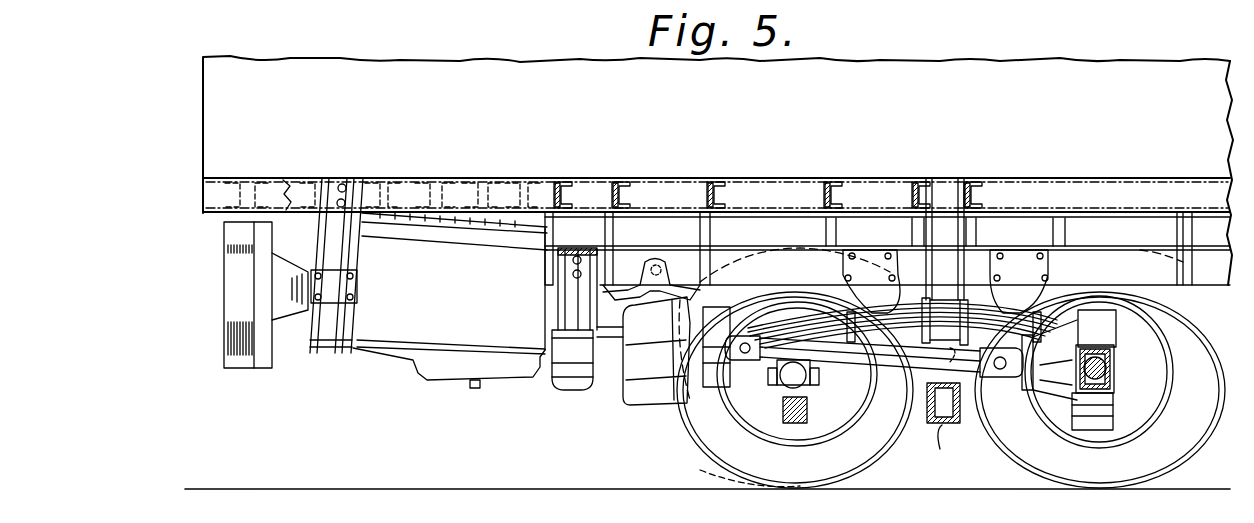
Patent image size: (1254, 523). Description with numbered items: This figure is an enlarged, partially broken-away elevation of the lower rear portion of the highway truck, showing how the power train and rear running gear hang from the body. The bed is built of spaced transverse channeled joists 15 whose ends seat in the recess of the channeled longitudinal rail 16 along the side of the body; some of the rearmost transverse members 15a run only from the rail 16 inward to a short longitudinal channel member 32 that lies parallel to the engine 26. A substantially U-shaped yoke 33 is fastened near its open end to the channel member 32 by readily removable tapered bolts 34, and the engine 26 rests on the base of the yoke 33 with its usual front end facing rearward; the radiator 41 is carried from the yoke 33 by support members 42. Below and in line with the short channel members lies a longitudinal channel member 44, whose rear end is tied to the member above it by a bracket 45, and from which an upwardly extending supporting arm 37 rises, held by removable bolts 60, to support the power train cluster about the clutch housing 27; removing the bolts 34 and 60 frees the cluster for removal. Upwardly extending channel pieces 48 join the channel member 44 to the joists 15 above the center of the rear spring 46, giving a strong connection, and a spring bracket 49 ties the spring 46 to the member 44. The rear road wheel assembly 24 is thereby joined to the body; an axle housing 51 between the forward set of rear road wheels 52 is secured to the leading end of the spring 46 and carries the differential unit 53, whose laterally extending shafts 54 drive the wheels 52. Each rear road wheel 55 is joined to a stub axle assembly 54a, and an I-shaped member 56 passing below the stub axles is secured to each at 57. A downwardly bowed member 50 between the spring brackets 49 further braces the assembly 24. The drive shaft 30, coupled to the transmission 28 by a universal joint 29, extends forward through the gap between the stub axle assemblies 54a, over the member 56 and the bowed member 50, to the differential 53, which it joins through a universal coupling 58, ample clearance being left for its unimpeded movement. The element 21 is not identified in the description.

The car body 21 is at (526, 78).
The channeled longitudinal rails 16 is at (203, 192).
The transverse channeled joists 15 is at (700, 188).
The rearmost transverse members 15a is at (258, 186).
The short channel member 32 is at (488, 190).
The tapered bolts 34 is at (350, 180).
The U-shaped yoke 33 is at (356, 260).
The radiator 41 is at (226, 248).
The support members 42 is at (268, 290).
The engine 26 is at (413, 322).
The bracket 45 is at (548, 262).
The supporting arm 37 is at (557, 310).
The removable bolts 60 is at (585, 258).
The clutch housing 27 is at (572, 392).
The transmission 28 is at (650, 400).
The universal joint 29 is at (745, 300).
The upwardly extending channel pieces 48 is at (945, 185).
The spring bracket 49 is at (888, 285).
The channel member 44 is at (1150, 268).
The rear road wheel assembly 24 is at (692, 463).
The rear road wheel spring 46 is at (868, 432).
The rear road wheel 55 is at (736, 482).
The I-shaped member 56 is at (795, 425).
The securing point 57 is at (768, 370).
The stub axle assembly 54a is at (822, 375).
The downwardly bowed member 50 is at (945, 425).
The universal coupling 58 is at (1000, 380).
The drive shaft 30 is at (942, 450).
The axle housing 51 is at (1125, 350).
The forward set of rear road wheels 52 is at (1160, 450).
The differential unit 53 is at (1130, 407).
The laterally extending shafts 54 is at (1097, 382).